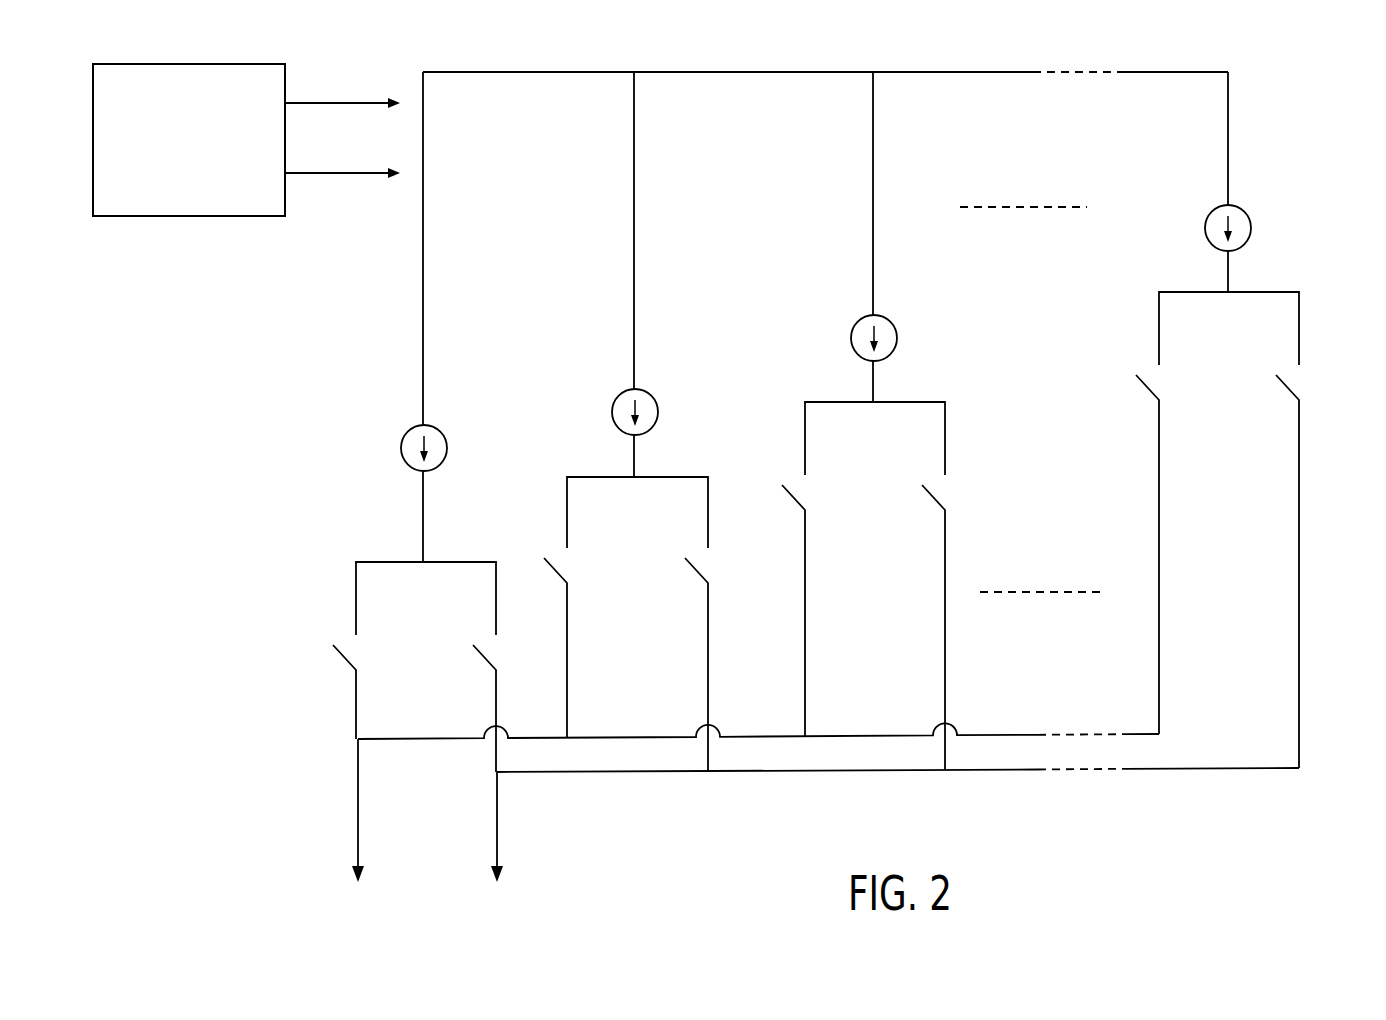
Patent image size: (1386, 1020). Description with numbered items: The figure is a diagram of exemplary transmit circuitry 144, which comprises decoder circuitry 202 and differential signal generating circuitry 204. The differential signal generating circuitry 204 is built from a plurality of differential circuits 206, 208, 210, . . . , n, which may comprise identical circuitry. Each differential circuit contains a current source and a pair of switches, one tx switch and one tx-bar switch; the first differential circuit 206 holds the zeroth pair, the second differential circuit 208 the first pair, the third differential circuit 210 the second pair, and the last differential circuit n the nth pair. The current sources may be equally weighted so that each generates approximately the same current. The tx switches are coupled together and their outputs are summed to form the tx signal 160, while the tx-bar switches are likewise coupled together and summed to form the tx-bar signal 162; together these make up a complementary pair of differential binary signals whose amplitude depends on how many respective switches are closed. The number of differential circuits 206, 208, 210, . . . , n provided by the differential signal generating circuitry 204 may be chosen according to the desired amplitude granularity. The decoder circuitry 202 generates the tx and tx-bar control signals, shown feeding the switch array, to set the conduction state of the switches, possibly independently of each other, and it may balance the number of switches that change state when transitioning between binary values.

The transmit circuitry 144 is at (1299, 72).
The decoder circuitry 202 is at (204, 205).
The differential signal generating circuitry 204 is at (773, 70).
The differential circuit 206 is at (375, 518).
The differential circuit 208 is at (585, 420).
The differential circuit 210 is at (820, 355).
The differential circuit n is at (1162, 232).
The tx signal 160 is at (360, 823).
The tx_b signal 162 is at (495, 816).